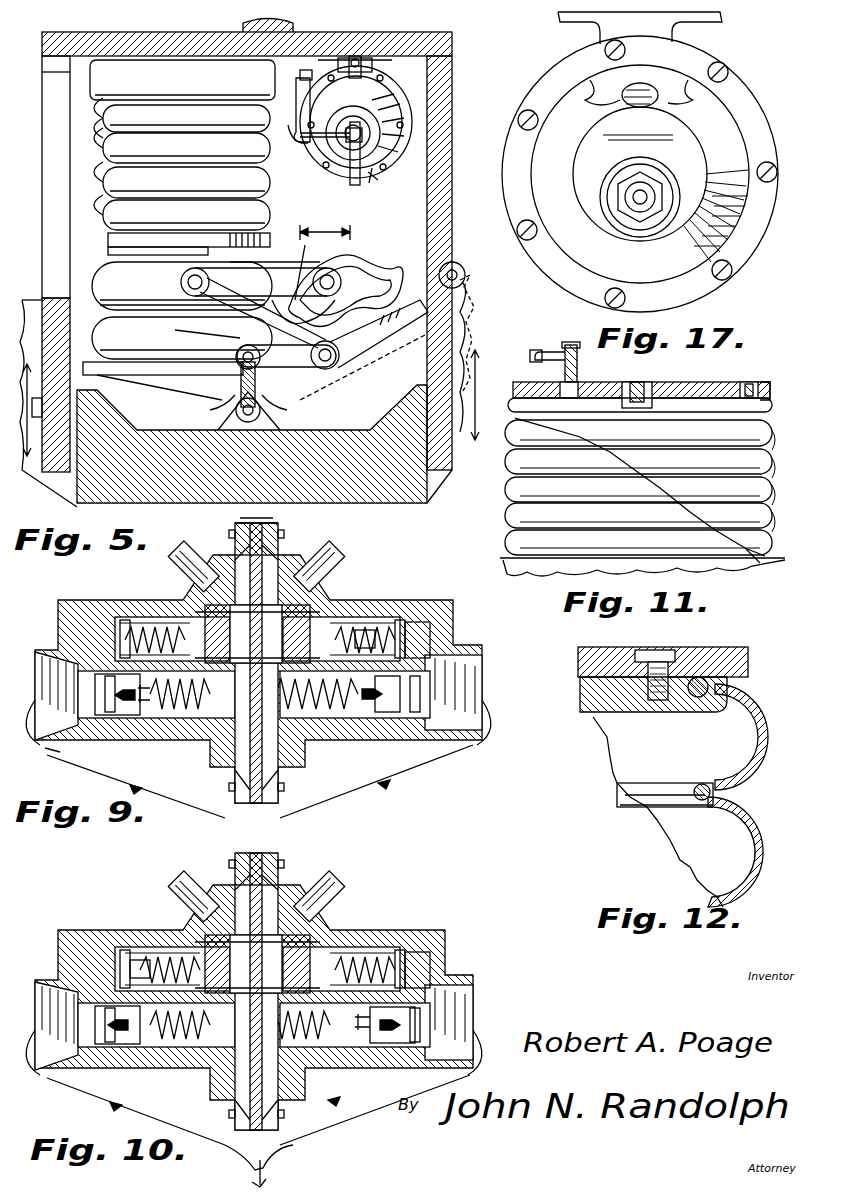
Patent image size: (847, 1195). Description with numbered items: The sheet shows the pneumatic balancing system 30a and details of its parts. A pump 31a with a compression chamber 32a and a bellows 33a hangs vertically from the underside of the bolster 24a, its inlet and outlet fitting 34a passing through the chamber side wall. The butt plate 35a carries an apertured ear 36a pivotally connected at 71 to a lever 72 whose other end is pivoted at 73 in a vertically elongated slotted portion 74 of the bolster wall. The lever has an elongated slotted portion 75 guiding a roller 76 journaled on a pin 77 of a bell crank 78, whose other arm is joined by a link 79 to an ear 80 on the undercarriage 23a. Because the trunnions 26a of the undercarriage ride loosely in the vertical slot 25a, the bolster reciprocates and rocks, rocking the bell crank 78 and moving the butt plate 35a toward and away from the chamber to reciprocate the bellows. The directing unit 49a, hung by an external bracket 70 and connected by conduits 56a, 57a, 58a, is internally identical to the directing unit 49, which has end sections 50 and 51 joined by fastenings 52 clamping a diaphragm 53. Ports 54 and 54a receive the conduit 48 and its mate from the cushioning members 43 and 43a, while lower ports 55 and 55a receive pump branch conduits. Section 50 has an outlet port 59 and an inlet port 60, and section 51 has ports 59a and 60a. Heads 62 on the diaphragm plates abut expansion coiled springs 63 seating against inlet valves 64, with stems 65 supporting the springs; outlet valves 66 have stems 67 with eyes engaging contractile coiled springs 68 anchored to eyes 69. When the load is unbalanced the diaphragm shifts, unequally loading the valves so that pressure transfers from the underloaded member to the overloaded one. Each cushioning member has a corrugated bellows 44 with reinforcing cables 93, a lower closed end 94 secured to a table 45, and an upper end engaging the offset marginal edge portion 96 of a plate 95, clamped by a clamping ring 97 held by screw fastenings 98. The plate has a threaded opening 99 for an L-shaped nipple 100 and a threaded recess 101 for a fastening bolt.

In FIG. 5, the undercarriage 23a is at (393, 490).
In FIG. 5, the bolster 24a is at (452, 50).
In FIG. 5, the vertical slot 25a is at (462, 305).
In FIG. 5, the pins or trunnions 26a is at (480, 380).
In FIG. 5, the pneumatic balancing system 30a is at (418, 165).
In FIG. 5, the pump 31a is at (100, 122).
In FIG. 5, the compression chamber 32a is at (182, 80).
In FIG. 5, the bellows 33a is at (100, 178).
In FIG. 5, the inlet and outlet fitting 34a is at (302, 56).
In FIG. 5, the butt plate 35a is at (108, 243).
In FIG. 5, the apertured ear 36a is at (185, 275).
In FIG. 5, the cushioning member 43a is at (143, 360).
In FIG. 12, the cushioning member 43a is at (760, 712).
In FIG. 11, the cushioning member 43 is at (510, 495).
In FIG. 11, the bellows 44 is at (506, 545).
In FIG. 12, the bellows 44 is at (757, 835).
In FIG. 11, the table 45 is at (535, 572).
In FIG. 5, the conduit 48 is at (372, 70).
In FIG. 11, the conduit 48 is at (545, 338).
In FIG. 9, the directing unit 49 is at (185, 768).
In FIG. 10, the directing unit 49 is at (360, 925).
In FIG. 5, the directing unit 49a is at (375, 180).
In FIG. 17, the directing unit 49a is at (745, 268).
In FIG. 17, the end section 50 is at (718, 128).
In FIG. 9, the end section 50 is at (355, 745).
In FIG. 10, the end section 50 is at (435, 930).
In FIG. 9, the end section 51 is at (160, 735).
In FIG. 10, the end section 51 is at (128, 947).
In FIG. 9, the fastenings 52 is at (284, 534).
In FIG. 10, the fastenings 52 is at (229, 1113).
In FIG. 9, the diaphragm 53 is at (229, 787).
In FIG. 10, the diaphragm 53 is at (278, 868).
In FIG. 17, the internally threaded port 54 is at (665, 100).
In FIG. 9, the internally threaded port 54 is at (318, 562).
In FIG. 10, the internally threaded port 54 is at (312, 892).
In FIG. 9, the internally threaded port 54a is at (190, 572).
In FIG. 10, the internally threaded port 54a is at (188, 905).
In FIG. 17, the lower internally threaded port 55 is at (645, 192).
In FIG. 9, the lower internally threaded port 55 is at (482, 670).
In FIG. 10, the lower internally threaded port 55 is at (473, 1003).
In FIG. 9, the lower internally threaded port 55a is at (40, 660).
In FIG. 10, the lower internally threaded port 55a is at (40, 990).
In FIG. 5, the conduit 56a is at (356, 122).
In FIG. 5, the conduit 57a is at (355, 180).
In FIG. 5, the conduit 58a is at (298, 178).
In FIG. 9, the lower outlet port 59 is at (372, 716).
In FIG. 10, the lower outlet port 59 is at (362, 1045).
In FIG. 10, the outlet port 59a is at (128, 1045).
In FIG. 9, the upper inlet port 60 is at (425, 600).
In FIG. 10, the upper inlet port 60 is at (415, 947).
In FIG. 9, the inlet port 60a is at (117, 617).
In FIG. 9, the head 62 is at (200, 618).
In FIG. 10, the head 62 is at (257, 1007).
In FIG. 9, the expansion coiled spring 63 is at (368, 617).
In FIG. 10, the expansion coiled spring 63 is at (120, 947).
In FIG. 9, the valve 64 is at (410, 620).
In FIG. 10, the valve 64 is at (400, 947).
In FIG. 9, the stem 65 is at (128, 617).
In FIG. 10, the stem 65 is at (135, 947).
In FIG. 9, the valve 66 is at (112, 716).
In FIG. 10, the valve 66 is at (112, 1045).
In FIG. 9, the stem 67 is at (385, 714).
In FIG. 10, the stem 67 is at (250, 1027).
In FIG. 9, the contractile coiled spring 68 is at (172, 718).
In FIG. 10, the contractile coiled spring 68 is at (175, 1047).
In FIG. 9, the eye 69 is at (262, 700).
In FIG. 10, the eye 69 is at (250, 1020).
In FIG. 5, the external bracket 70 is at (372, 56).
In FIG. 17, the external bracket 70 is at (722, 18).
In FIG. 9, the external bracket 70 is at (280, 520).
In FIG. 5, the pivot 71 is at (261, 279).
In FIG. 5, the lever 72 is at (292, 278).
In FIG. 5, the pivot 73 is at (462, 265).
In FIG. 5, the slotted portion 74 is at (452, 232).
In FIG. 5, the elongated slotted portion 75 is at (365, 262).
In FIG. 5, the roller 76 is at (303, 306).
In FIG. 5, the pin 77 is at (341, 282).
In FIG. 5, the bell crank 78 is at (322, 370).
In FIG. 5, the link 79 is at (246, 411).
In FIG. 5, the ear 80 is at (262, 412).
In FIG. 11, the reinforcing cables 93 is at (774, 512).
In FIG. 12, the reinforcing cables 93 is at (698, 697).
In FIG. 11, the lower closed end 94 is at (755, 560).
In FIG. 11, the plate 95 is at (700, 382).
In FIG. 12, the plate 95 is at (590, 690).
In FIG. 11, the downwardly offset marginal edge portion 96 is at (770, 405).
In FIG. 12, the downwardly offset marginal edge portion 96 is at (652, 712).
In FIG. 11, the clamping ring 97 is at (770, 386).
In FIG. 12, the clamping ring 97 is at (748, 662).
In FIG. 11, the screw fastenings 98 is at (750, 382).
In FIG. 12, the screw fastenings 98 is at (660, 647).
In FIG. 11, the threaded opening 99 is at (578, 385).
In FIG. 11, the L-shaped nipple 100 is at (572, 345).
In FIG. 11, the threaded recess 101 is at (640, 382).